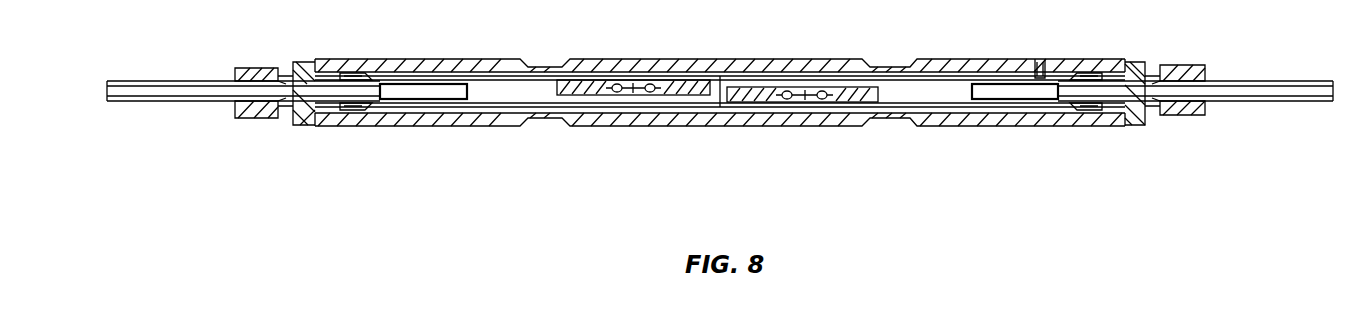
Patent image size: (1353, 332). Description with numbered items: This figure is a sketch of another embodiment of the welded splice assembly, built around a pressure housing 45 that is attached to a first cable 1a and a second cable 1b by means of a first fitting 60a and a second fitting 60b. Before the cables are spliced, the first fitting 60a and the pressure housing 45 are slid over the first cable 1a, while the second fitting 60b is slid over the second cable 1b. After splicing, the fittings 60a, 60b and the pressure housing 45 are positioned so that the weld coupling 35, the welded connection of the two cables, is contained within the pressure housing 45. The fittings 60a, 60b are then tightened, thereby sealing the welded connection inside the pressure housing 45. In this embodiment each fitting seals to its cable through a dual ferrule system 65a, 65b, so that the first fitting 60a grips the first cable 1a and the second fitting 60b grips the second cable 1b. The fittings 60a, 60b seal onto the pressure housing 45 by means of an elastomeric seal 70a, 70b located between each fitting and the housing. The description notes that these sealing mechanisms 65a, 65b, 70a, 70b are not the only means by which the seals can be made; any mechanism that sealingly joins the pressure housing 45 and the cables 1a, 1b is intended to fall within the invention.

The first cable 1a is at (137, 81).
The second cable 1b is at (1317, 79).
The weld coupling 35 is at (463, 80).
The pressure housing 45 is at (600, 63).
The first fitting 60a is at (313, 80).
The second fitting 60b is at (1130, 65).
The dual ferrule system 65a is at (257, 77).
The dual ferrule system 65b is at (1182, 72).
The elastomeric seal 70a is at (363, 75).
The elastomeric seal 70b is at (1087, 75).